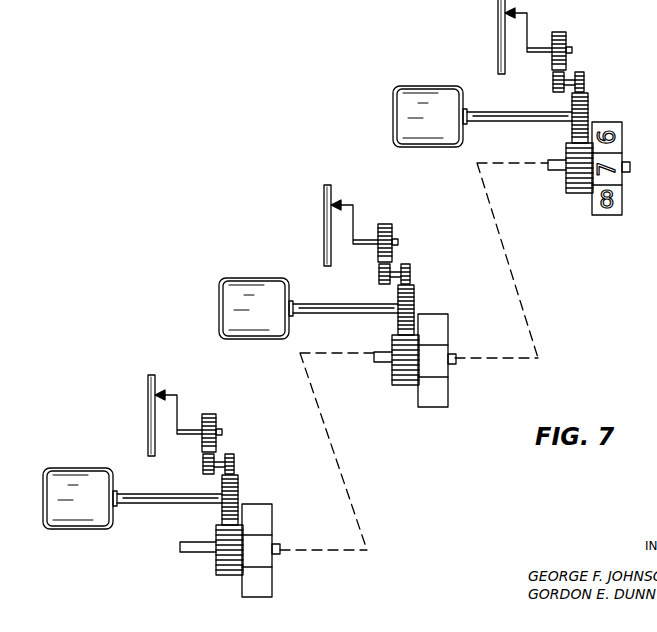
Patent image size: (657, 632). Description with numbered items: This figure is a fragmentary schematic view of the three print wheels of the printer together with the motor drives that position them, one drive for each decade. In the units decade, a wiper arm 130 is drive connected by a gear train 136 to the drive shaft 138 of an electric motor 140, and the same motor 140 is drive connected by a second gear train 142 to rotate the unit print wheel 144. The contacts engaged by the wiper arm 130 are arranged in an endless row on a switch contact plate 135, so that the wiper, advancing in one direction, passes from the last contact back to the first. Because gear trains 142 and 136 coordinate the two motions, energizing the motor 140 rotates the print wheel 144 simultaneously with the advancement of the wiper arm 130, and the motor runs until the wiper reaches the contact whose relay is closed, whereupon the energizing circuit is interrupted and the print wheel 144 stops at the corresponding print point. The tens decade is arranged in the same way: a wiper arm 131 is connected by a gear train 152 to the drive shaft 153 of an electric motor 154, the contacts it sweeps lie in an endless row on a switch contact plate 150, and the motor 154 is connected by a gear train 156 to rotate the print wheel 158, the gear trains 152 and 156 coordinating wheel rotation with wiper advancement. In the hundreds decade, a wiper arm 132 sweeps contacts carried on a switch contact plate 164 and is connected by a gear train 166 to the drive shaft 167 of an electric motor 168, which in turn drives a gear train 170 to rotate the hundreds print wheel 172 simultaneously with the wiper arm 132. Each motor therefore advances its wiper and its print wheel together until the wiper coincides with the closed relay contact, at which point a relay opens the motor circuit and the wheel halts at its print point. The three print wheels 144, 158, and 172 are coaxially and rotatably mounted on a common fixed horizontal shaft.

The wiper arm 130 is at (546, 29).
The wiper arm 131 is at (369, 218).
The wiper arm 132 is at (191, 410).
The switch contact plate 135 is at (474, 37).
The gear train 136 is at (535, 66).
The drive shaft 138 is at (519, 134).
The electric motor 140 is at (407, 116).
The gear train 142 is at (613, 118).
The unit print wheel 144 is at (592, 196).
The switch contact plate 150 is at (295, 225).
The gear train 152 is at (424, 273).
The drive shaft 153 is at (345, 297).
The electric motor 154 is at (253, 293).
The gear train 156 is at (398, 381).
The print wheel 158 is at (451, 376).
The switch contact plate 164 is at (124, 415).
The gear train 166 is at (241, 451).
The drive shaft 167 is at (169, 524).
The electric motor 168 is at (73, 480).
The gear train 170 is at (226, 573).
The hundreds print wheel 172 is at (283, 534).